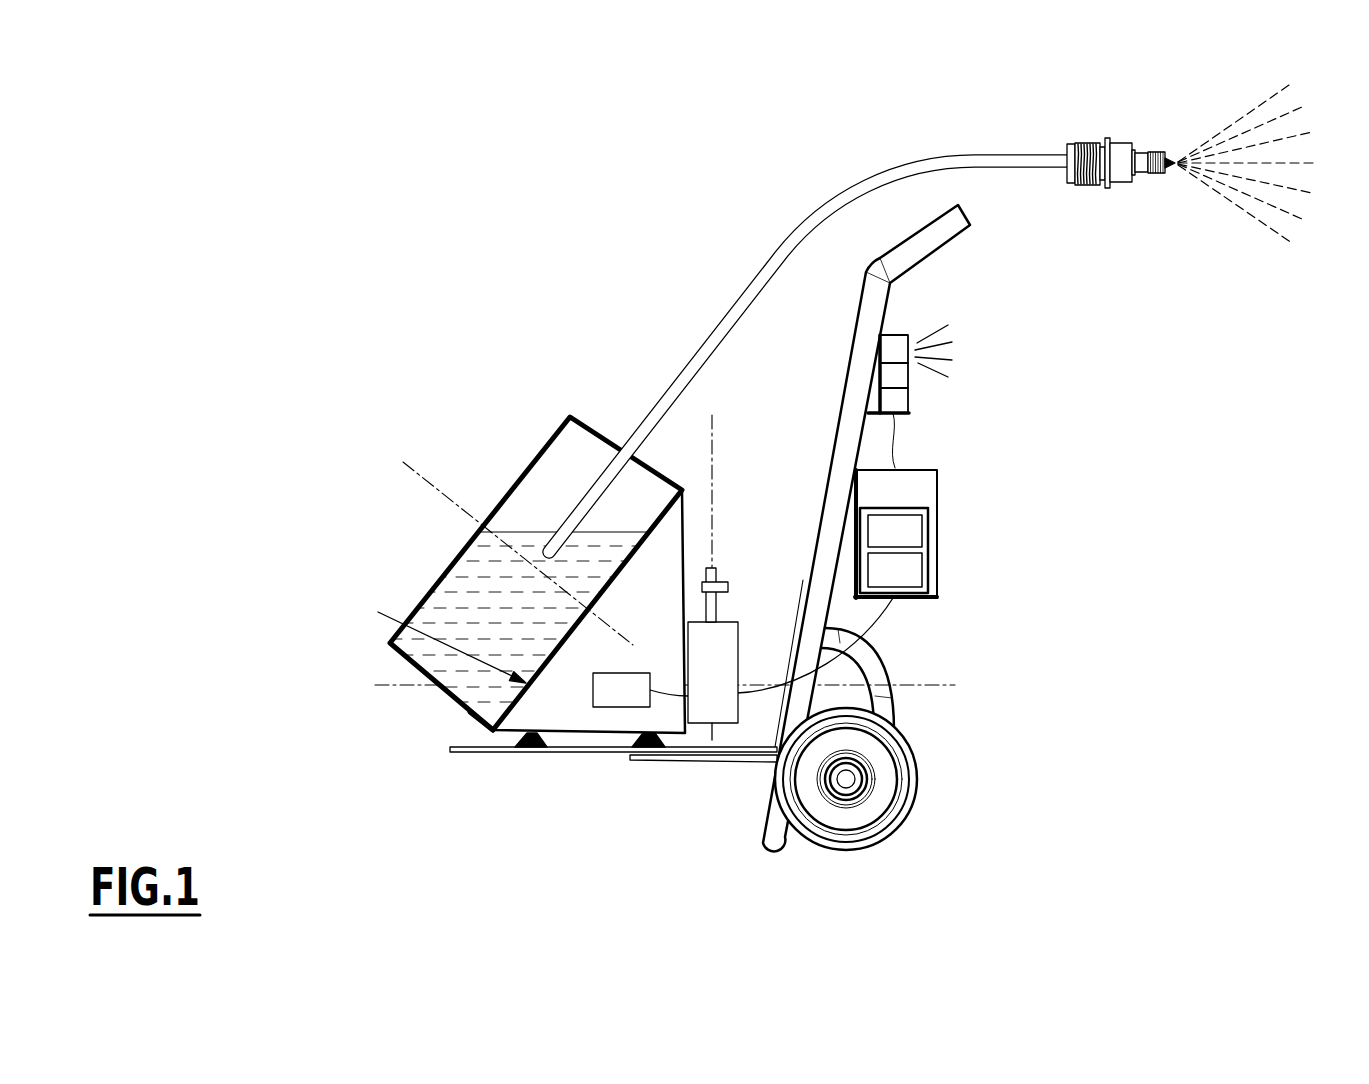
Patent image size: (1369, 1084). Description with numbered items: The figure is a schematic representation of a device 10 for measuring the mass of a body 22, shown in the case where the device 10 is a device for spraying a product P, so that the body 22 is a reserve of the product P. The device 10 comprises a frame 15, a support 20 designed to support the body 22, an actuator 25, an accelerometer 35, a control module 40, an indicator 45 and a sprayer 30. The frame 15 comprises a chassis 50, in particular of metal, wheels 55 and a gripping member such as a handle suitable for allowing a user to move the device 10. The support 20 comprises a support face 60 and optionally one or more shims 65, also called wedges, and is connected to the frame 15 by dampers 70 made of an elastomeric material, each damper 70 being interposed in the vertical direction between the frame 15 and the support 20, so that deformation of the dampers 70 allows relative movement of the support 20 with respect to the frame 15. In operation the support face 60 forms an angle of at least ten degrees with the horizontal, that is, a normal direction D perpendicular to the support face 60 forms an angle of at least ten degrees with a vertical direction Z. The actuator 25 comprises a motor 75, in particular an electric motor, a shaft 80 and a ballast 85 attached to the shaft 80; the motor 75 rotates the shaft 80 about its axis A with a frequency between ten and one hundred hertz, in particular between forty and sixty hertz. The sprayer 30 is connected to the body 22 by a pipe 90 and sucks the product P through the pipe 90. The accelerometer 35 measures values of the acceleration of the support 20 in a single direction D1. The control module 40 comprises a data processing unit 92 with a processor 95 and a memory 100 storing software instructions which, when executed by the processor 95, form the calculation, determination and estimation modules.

The device 10 is at (362, 251).
The frame 15 is at (484, 781).
The support 20 is at (582, 715).
The body 22 is at (455, 583).
The actuator 25 is at (731, 702).
The sprayer 30 is at (1115, 140).
The accelerometer 35 is at (621, 689).
The control module 40 is at (946, 527).
The indicator 45 is at (958, 405).
The chassis 50 is at (460, 750).
The wheels 55 is at (917, 780).
The support face 60 is at (435, 636).
The shims 65 is at (462, 717).
The dampers 70 is at (532, 748).
The motor 75 is at (694, 709).
The shaft 80 is at (714, 620).
The ballast 85 is at (716, 580).
The pipe 90 is at (787, 352).
The data processing unit 92 is at (949, 550).
The processor 95 is at (895, 571).
The memory 100 is at (895, 532).
The product P is at (557, 467).
The normal direction D is at (404, 462).
The single direction D1 is at (955, 685).
The vertical direction Z is at (752, 508).
The axis A is at (712, 432).